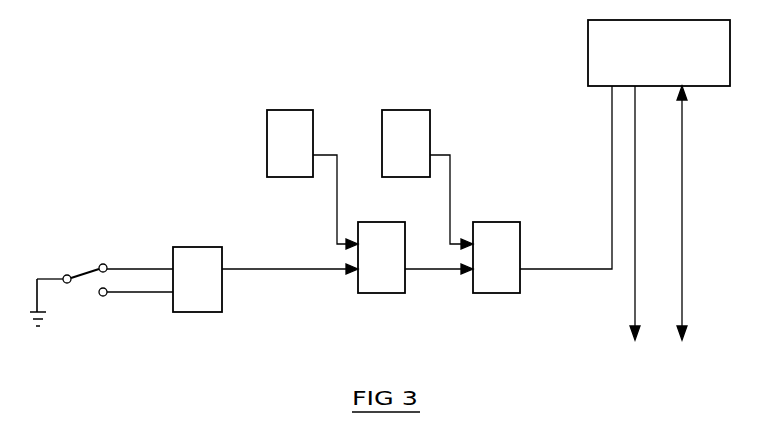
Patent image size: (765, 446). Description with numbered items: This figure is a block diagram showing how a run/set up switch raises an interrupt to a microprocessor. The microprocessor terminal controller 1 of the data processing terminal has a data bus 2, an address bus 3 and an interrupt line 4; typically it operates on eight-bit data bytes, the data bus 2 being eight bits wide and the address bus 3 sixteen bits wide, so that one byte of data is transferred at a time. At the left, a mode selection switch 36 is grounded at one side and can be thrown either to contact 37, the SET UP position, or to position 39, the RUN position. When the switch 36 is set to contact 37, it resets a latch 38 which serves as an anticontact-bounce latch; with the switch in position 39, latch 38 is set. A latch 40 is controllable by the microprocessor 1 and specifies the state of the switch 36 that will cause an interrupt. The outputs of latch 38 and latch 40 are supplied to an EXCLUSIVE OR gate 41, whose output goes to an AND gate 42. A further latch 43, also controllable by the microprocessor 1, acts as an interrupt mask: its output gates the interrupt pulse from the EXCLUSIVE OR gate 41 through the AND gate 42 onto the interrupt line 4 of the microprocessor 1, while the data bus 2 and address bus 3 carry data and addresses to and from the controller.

The microprocessor terminal controller 1 is at (730, 68).
The data bus 2 is at (683, 168).
The address bus 3 is at (635, 170).
The interrupt line 4 is at (612, 170).
The mode selection switch 36 is at (80, 270).
The contact 37 is at (103, 296).
The latch 38 is at (223, 312).
The position 39 is at (107, 264).
The latch 40 is at (292, 110).
The EXCLUSIVE OR gate 41 is at (380, 293).
The AND gate 42 is at (500, 293).
The latch 43 is at (405, 110).